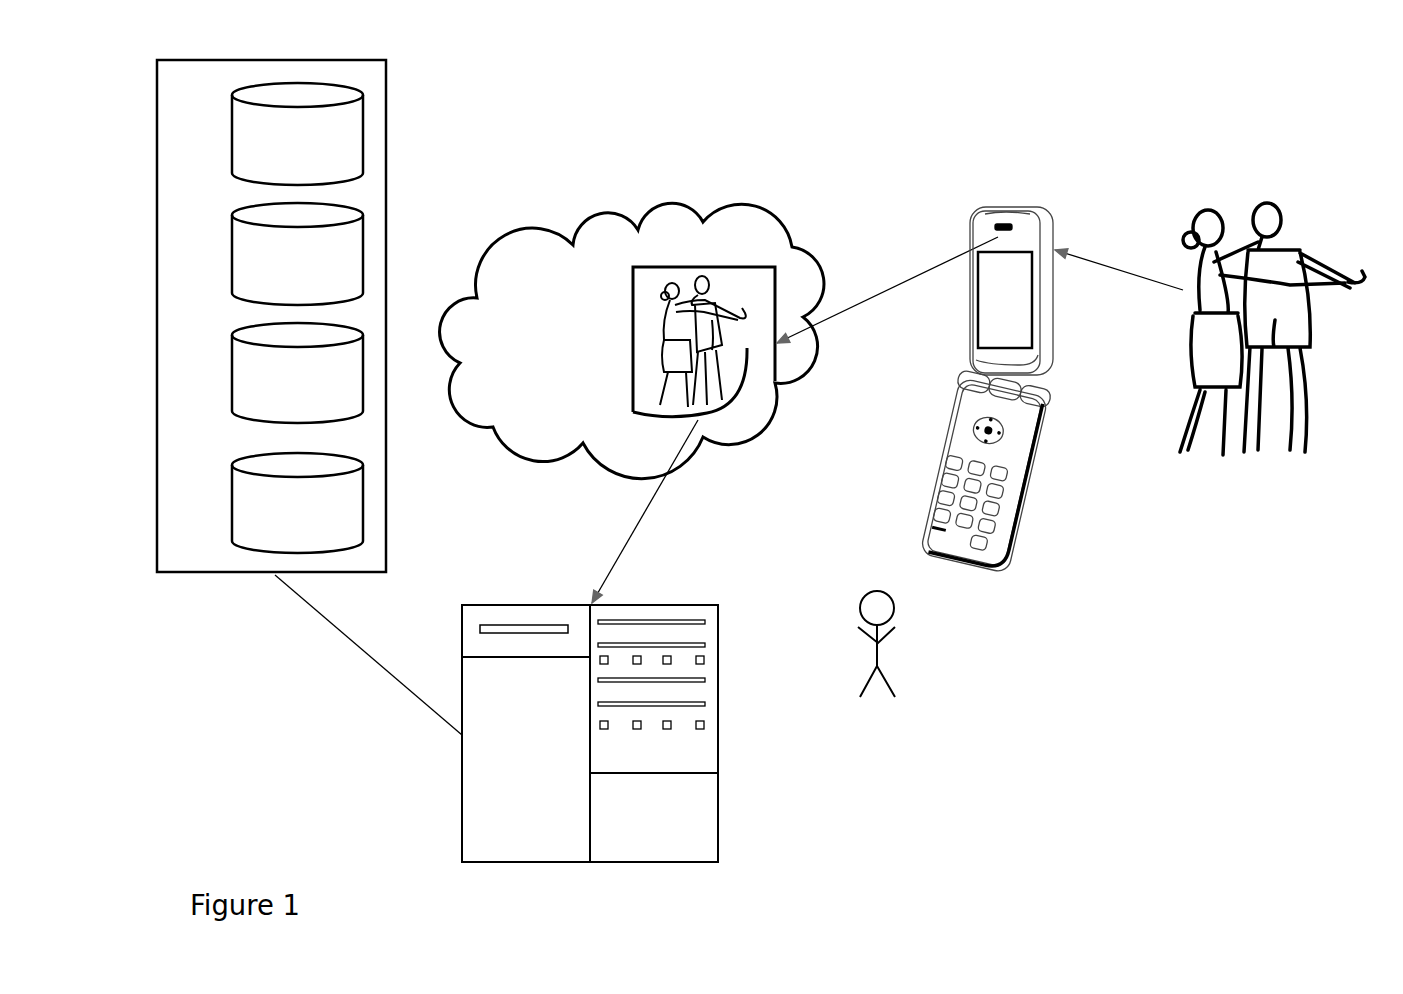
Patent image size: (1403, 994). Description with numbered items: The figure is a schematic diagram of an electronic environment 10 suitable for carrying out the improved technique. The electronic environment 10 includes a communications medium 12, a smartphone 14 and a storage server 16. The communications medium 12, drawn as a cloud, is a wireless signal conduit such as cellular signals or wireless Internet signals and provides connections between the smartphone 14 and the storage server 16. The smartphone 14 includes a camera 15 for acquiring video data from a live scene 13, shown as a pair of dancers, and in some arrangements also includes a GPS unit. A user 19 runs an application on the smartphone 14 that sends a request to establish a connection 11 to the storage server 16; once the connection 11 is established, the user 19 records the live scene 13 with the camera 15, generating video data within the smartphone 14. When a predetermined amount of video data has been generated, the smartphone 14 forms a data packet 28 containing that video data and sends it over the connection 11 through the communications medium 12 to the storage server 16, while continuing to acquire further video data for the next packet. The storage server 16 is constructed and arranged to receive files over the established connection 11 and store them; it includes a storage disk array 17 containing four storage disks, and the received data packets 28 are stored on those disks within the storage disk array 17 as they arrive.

The electronic environment 10 is at (1140, 88).
The connection 11 is at (895, 268).
The communications medium 12 is at (582, 323).
The live scene 13 is at (1268, 457).
The smartphone 14 is at (988, 394).
The camera 15 is at (1010, 225).
The storage server 16 is at (637, 822).
The storage disk array 17 is at (202, 104).
The user 19 is at (882, 702).
The data packet 28 is at (703, 265).